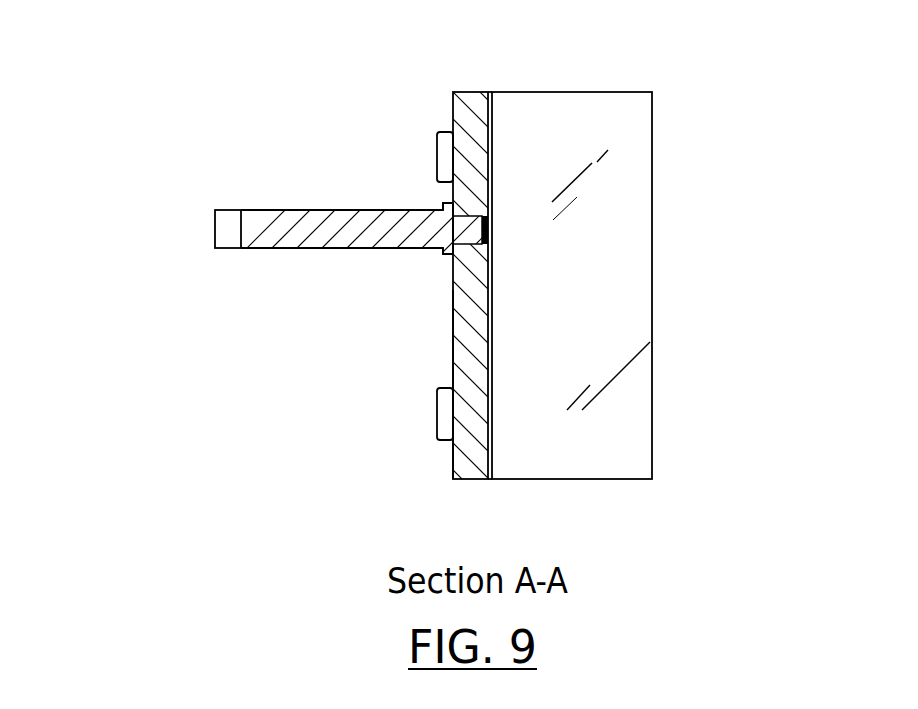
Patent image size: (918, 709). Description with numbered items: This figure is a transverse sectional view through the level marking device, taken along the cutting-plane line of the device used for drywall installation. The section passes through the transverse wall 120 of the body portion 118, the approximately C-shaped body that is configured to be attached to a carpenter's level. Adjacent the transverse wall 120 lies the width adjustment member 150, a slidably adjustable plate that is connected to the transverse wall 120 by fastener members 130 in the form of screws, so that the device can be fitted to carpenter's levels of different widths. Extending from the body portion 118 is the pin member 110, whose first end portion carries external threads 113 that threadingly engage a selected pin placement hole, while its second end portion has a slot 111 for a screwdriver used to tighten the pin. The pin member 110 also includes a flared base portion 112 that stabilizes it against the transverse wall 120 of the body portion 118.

The pin member 110 is at (327, 210).
The slot 111 is at (227, 230).
The flared base portion 112 is at (446, 262).
The external threads 113 is at (465, 247).
The body portion 118 is at (453, 348).
The transverse wall 120 is at (467, 112).
The fastener members 130 is at (445, 158).
The width adjustment member 150 is at (627, 107).